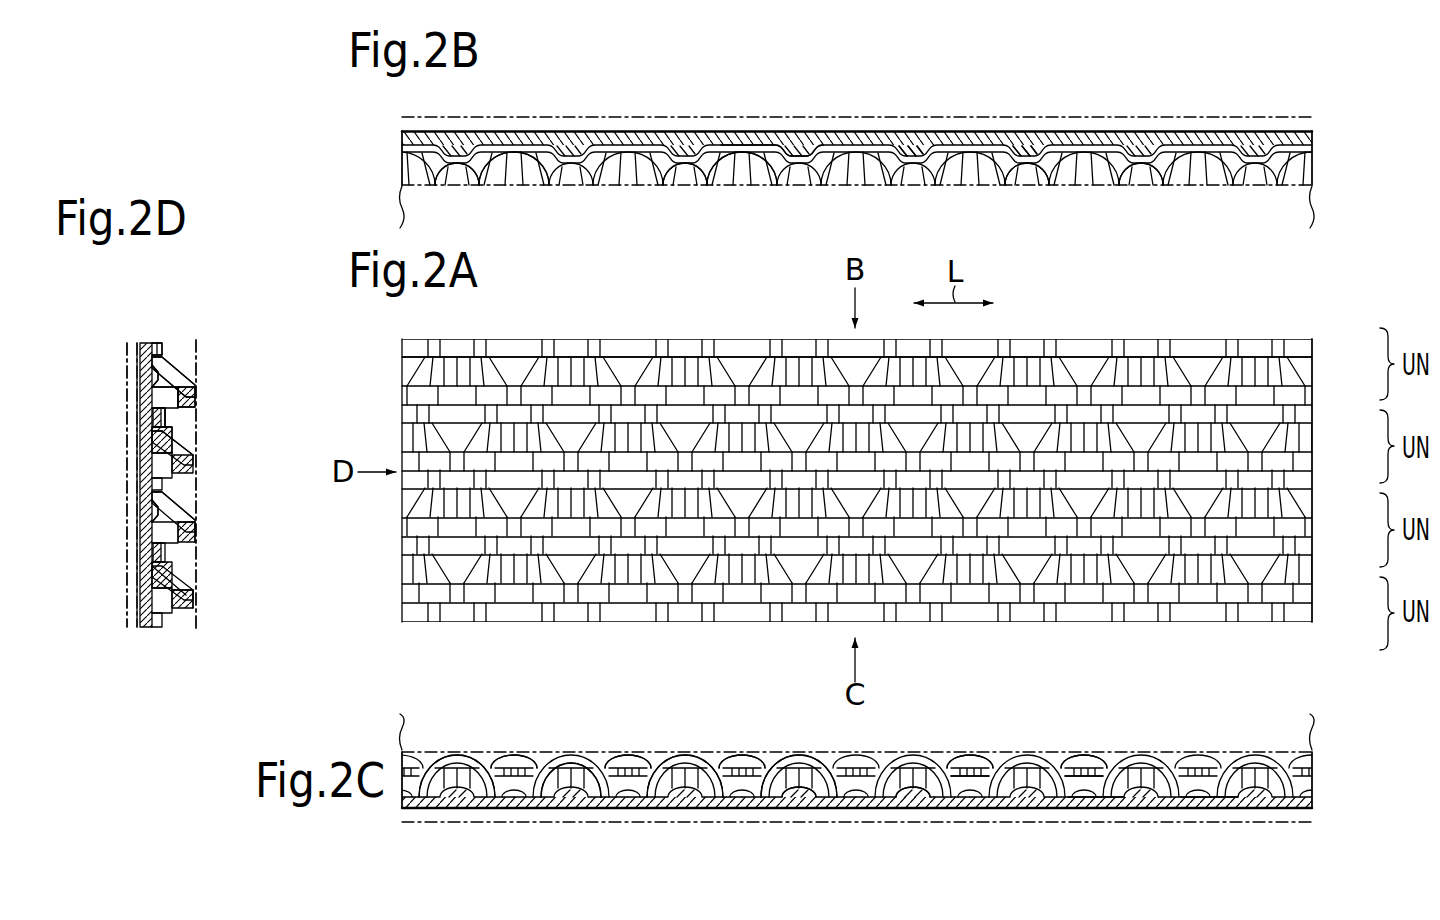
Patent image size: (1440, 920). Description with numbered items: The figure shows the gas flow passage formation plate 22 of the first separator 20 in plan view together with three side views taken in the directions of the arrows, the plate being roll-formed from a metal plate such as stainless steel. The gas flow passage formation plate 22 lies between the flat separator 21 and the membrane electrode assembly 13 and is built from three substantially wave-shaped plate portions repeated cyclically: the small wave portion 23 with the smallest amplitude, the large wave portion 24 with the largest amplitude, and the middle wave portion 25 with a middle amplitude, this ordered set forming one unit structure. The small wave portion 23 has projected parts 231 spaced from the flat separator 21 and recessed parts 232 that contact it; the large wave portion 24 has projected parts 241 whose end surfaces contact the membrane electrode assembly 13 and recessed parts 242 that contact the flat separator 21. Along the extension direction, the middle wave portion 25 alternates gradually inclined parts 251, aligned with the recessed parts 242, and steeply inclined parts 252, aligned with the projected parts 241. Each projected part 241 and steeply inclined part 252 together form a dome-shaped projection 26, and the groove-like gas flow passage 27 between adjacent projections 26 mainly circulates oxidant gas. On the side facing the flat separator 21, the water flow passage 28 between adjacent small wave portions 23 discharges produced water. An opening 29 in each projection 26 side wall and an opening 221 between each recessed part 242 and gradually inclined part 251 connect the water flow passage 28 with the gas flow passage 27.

In FIG. 2B, the membrane electrode assembly 13 is at (1168, 186).
In FIG. 2C, the membrane electrode assembly 13 is at (1170, 752).
In FIG. 2D, the membrane electrode assembly 13 is at (196, 630).
In FIG. 2B, the first separator 20 is at (1127, 65).
In FIG. 2C, the first separator 20 is at (1225, 866).
In FIG. 2D, the first separator 20 is at (185, 698).
In FIG. 2B, the flat separator 21 is at (1098, 117).
In FIG. 2C, the flat separator 21 is at (1270, 822).
In FIG. 2D, the flat separator 21 is at (127, 627).
In FIG. 2B, the gas flow passage formation plate 22 is at (1198, 129).
In FIG. 2A, the gas flow passage formation plate 22 is at (1195, 339).
In FIG. 2C, the gas flow passage formation plate 22 is at (1231, 808).
In FIG. 2D, the gas flow passage formation plate 22 is at (148, 627).
In FIG. 2C, the opening 221 is at (1085, 800).
In FIG. 2D, the opening 221 is at (180, 482).
In FIG. 2A, the small wave portion 23 is at (1313, 339).
In FIG. 2D, the small wave portion 23 is at (130, 290).
In FIG. 2B, the projected part 231 is at (455, 128).
In FIG. 2A, the projected part 231 is at (455, 344).
In FIG. 2C, the projected part 231 is at (455, 808).
In FIG. 2D, the projected part 231 is at (165, 350).
In FIG. 2B, the recessed part 232 is at (515, 138).
In FIG. 2A, the recessed part 232 is at (511, 346).
In FIG. 2C, the recessed part 232 is at (511, 810).
In FIG. 2D, the recessed part 232 is at (148, 343).
In FIG. 2A, the large wave portion 24 is at (1313, 372).
In FIG. 2D, the large wave portion 24 is at (159, 417).
In FIG. 2B, the projected part 241 is at (748, 162).
In FIG. 2A, the projected part 241 is at (740, 400).
In FIG. 2C, the projected part 241 is at (573, 762).
In FIG. 2D, the projected part 241 is at (183, 406).
In FIG. 2B, the recessed part 242 is at (691, 152).
In FIG. 2A, the recessed part 242 is at (683, 398).
In FIG. 2C, the recessed part 242 is at (625, 810).
In FIG. 2D, the recessed part 242 is at (140, 418).
In FIG. 2A, the middle wave portion 25 is at (1313, 352).
In FIG. 2D, the middle wave portion 25 is at (270, 345).
In FIG. 2B, the gradually inclined part 251 is at (576, 150).
In FIG. 2A, the gradually inclined part 251 is at (570, 364).
In FIG. 2C, the gradually inclined part 251 is at (742, 805).
In FIG. 2D, the gradually inclined part 251 is at (183, 358).
In FIG. 2B, the steeply inclined part 252 is at (633, 160).
In FIG. 2A, the steeply inclined part 252 is at (627, 366).
In FIG. 2C, the steeply inclined part 252 is at (683, 808).
In FIG. 2D, the steeply inclined part 252 is at (196, 394).
In FIG. 2B, the projection 26 is at (1025, 192).
In FIG. 2C, the projection 26 is at (965, 746).
In FIG. 2D, the projection 26 is at (188, 542).
In FIG. 2B, the gas flow passage 27 is at (786, 180).
In FIG. 2C, the gas flow passage 27 is at (820, 752).
In FIG. 2D, the gas flow passage 27 is at (182, 507).
In FIG. 2B, the water flow passage 28 is at (914, 130).
In FIG. 2C, the water flow passage 28 is at (800, 792).
In FIG. 2D, the water flow passage 28 is at (142, 377).
In FIG. 2C, the opening 29 is at (970, 780).
In FIG. 2D, the opening 29 is at (178, 447).